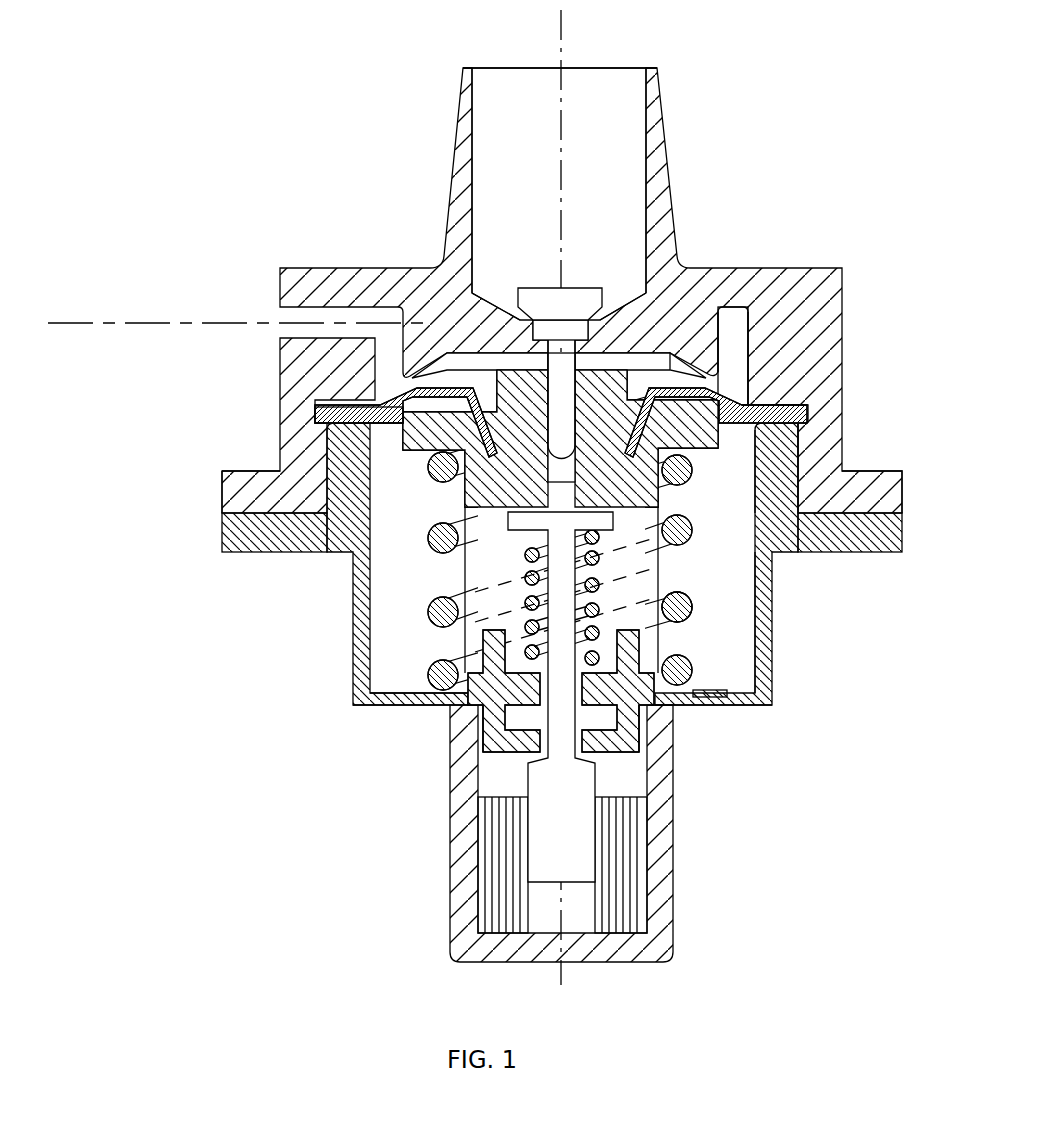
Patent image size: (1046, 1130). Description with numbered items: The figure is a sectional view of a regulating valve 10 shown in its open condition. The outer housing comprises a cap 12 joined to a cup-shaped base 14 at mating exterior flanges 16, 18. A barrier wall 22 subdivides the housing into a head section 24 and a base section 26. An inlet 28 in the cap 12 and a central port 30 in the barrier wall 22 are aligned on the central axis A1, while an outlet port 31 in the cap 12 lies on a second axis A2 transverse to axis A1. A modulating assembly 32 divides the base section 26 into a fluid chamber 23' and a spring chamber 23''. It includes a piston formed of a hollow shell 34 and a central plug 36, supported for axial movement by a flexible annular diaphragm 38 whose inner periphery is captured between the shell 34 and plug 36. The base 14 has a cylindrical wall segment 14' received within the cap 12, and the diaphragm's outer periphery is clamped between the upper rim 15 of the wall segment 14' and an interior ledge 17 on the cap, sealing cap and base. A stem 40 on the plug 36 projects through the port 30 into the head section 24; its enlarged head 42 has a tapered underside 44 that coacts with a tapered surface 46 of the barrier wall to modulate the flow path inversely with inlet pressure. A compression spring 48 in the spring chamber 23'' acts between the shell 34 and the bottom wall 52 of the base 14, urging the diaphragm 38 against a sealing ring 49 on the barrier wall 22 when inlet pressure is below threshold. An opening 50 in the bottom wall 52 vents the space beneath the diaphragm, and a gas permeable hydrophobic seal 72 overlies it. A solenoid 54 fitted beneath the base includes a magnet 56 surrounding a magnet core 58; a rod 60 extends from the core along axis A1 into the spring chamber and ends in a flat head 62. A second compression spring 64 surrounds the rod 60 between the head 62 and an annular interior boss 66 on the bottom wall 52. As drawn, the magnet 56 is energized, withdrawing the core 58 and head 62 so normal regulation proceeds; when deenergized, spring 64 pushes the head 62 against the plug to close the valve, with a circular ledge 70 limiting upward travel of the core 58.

The regulating valve 10 is at (824, 188).
The cap 12 is at (832, 268).
The cup-shaped base 14 is at (576, 564).
The cylindrical wall segment 14' is at (753, 468).
The upper rim 15 is at (813, 432).
The exterior flange 16 is at (903, 492).
The interior ledge 17 is at (790, 398).
The exterior flange 18 is at (903, 533).
The barrier wall 22 is at (452, 331).
The fluid chamber 23' is at (738, 317).
The spring chamber 23'' is at (784, 622).
The head section 24 is at (616, 200).
The base section 26 is at (740, 543).
The inlet 28 is at (632, 67).
The central port 30 is at (519, 320).
The outlet port 31 is at (288, 328).
The modulating assembly 32 is at (402, 518).
The hollow shell 34 is at (700, 449).
The central plug 36 is at (532, 431).
The flexible annular diaphragm 38 is at (727, 390).
The stem 40 is at (576, 450).
The enlarged head 42 is at (537, 288).
The tapered underside 44 is at (593, 306).
The tapered surface 46 is at (611, 318).
The compression spring 48 is at (695, 605).
The sealing ring 49 is at (335, 399).
The opening 50 is at (705, 704).
The bottom wall 52 is at (392, 706).
The solenoid 54 is at (688, 835).
The magnet 56 is at (632, 882).
The magnet core 58 is at (576, 835).
The rod 60 is at (533, 732).
The flat head 62 is at (579, 597).
The second compression spring 64 is at (525, 577).
The annular interior boss 66 is at (556, 722).
The circular ledge 70 is at (622, 740).
The gas permeable hydrophobic seal 72 is at (709, 689).
The central axis A1 is at (557, 28).
The second axis A2 is at (136, 321).